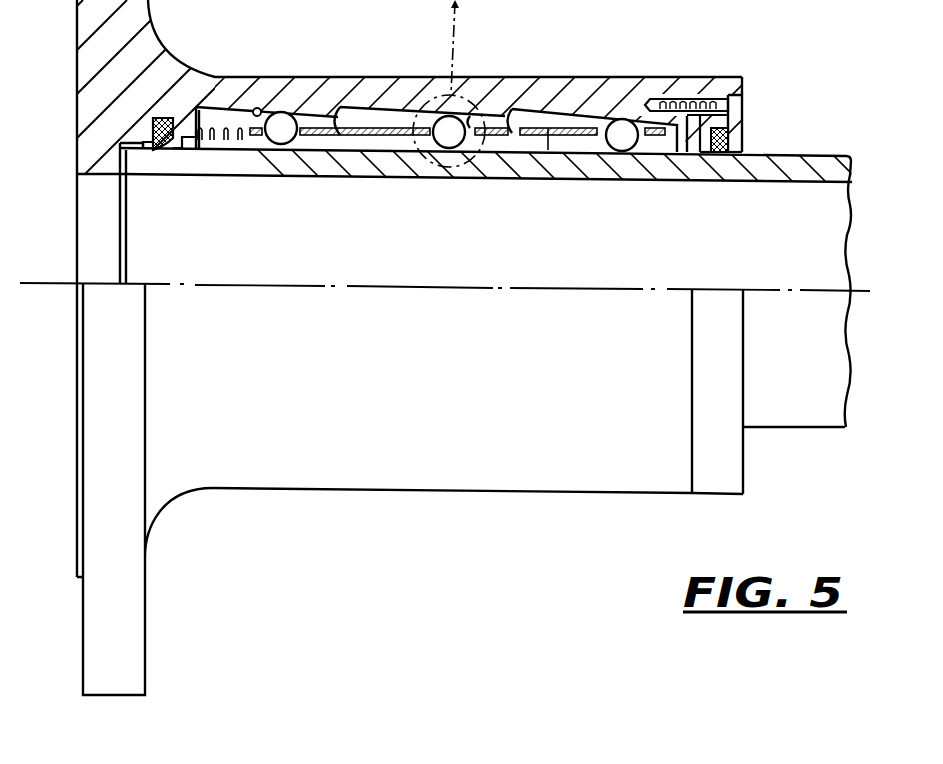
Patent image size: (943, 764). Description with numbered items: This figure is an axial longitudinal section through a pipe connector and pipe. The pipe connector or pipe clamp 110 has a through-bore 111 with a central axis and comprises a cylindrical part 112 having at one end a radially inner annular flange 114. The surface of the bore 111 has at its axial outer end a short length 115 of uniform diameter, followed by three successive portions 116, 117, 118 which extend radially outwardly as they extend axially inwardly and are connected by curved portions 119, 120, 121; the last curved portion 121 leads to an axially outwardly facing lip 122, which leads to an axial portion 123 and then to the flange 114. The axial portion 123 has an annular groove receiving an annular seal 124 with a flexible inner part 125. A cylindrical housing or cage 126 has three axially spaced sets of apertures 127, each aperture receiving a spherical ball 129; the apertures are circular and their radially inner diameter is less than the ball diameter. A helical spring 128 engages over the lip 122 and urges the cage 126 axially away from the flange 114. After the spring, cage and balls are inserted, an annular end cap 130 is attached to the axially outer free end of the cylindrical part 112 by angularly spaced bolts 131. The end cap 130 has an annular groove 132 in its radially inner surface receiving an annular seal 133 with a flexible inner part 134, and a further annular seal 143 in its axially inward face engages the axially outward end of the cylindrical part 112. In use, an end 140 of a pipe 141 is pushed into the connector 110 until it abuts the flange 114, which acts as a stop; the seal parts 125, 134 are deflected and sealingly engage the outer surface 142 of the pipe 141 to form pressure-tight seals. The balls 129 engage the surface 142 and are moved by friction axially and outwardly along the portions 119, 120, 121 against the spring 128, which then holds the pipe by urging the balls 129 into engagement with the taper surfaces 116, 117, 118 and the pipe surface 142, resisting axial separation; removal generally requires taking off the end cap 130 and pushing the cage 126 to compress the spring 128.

The pipe connector 110 is at (452, 510).
The through-bore 111 is at (92, 247).
The cylindrical part 112 is at (572, 468).
The radially inner annular flange 114 is at (94, 164).
The short length of uniform diameter 115 is at (672, 152).
The taper portion 116 is at (566, 163).
The taper portion 117 is at (402, 150).
The taper portion 118 is at (262, 110).
The curved portion 119 is at (522, 160).
The curved portion 120 is at (349, 158).
The curved portion 121 is at (232, 126).
The axially outwardly facing lip 122 is at (189, 163).
The axial portion 123 is at (186, 163).
The annular seal 124 is at (168, 126).
The flexible inner part 125 is at (146, 178).
The cage 126 is at (386, 125).
The apertures 127 is at (486, 98).
The helical spring 128 is at (258, 108).
The spherical ball 129 is at (620, 122).
The annular end cap 130 is at (744, 127).
The bolts 131 is at (740, 105).
The annular groove 132 is at (742, 136).
The annular seal 133 is at (745, 157).
The flexible inner part 134 is at (700, 154).
The pipe end 140 is at (271, 170).
The pipe 141 is at (808, 155).
The outer surface of the pipe 142 is at (548, 150).
The annular seal 143 is at (700, 107).